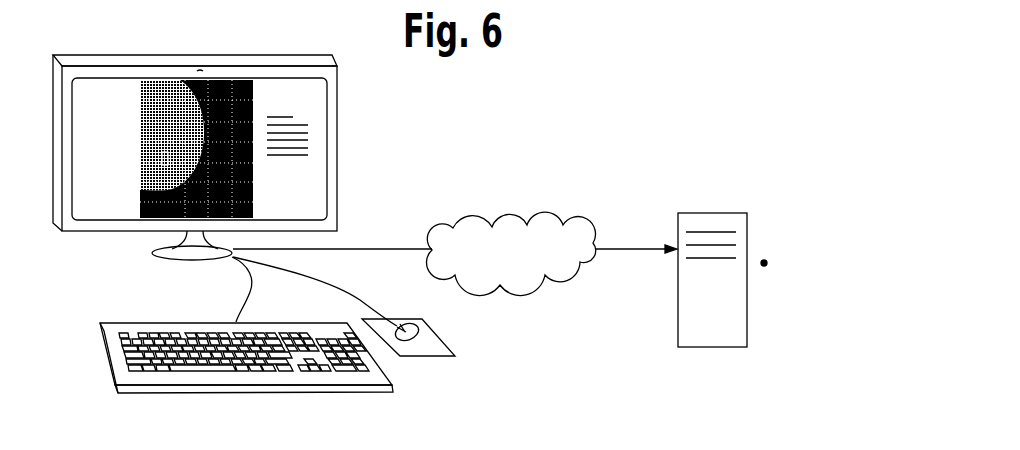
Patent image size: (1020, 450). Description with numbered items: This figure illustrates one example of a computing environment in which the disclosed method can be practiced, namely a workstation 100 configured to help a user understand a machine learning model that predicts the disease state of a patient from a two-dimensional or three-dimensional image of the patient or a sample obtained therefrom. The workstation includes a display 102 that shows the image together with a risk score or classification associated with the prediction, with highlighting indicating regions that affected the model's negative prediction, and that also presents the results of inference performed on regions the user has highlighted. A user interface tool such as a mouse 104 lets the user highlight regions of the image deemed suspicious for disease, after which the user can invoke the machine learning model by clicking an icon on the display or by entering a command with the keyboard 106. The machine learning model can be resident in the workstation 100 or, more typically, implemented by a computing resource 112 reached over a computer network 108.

The workstation 100 is at (409, 140).
The display 102 is at (337, 129).
The mouse 104 is at (433, 337).
The keyboard 106 is at (176, 322).
The computer network 108 is at (483, 215).
The computing resource 112 is at (688, 212).